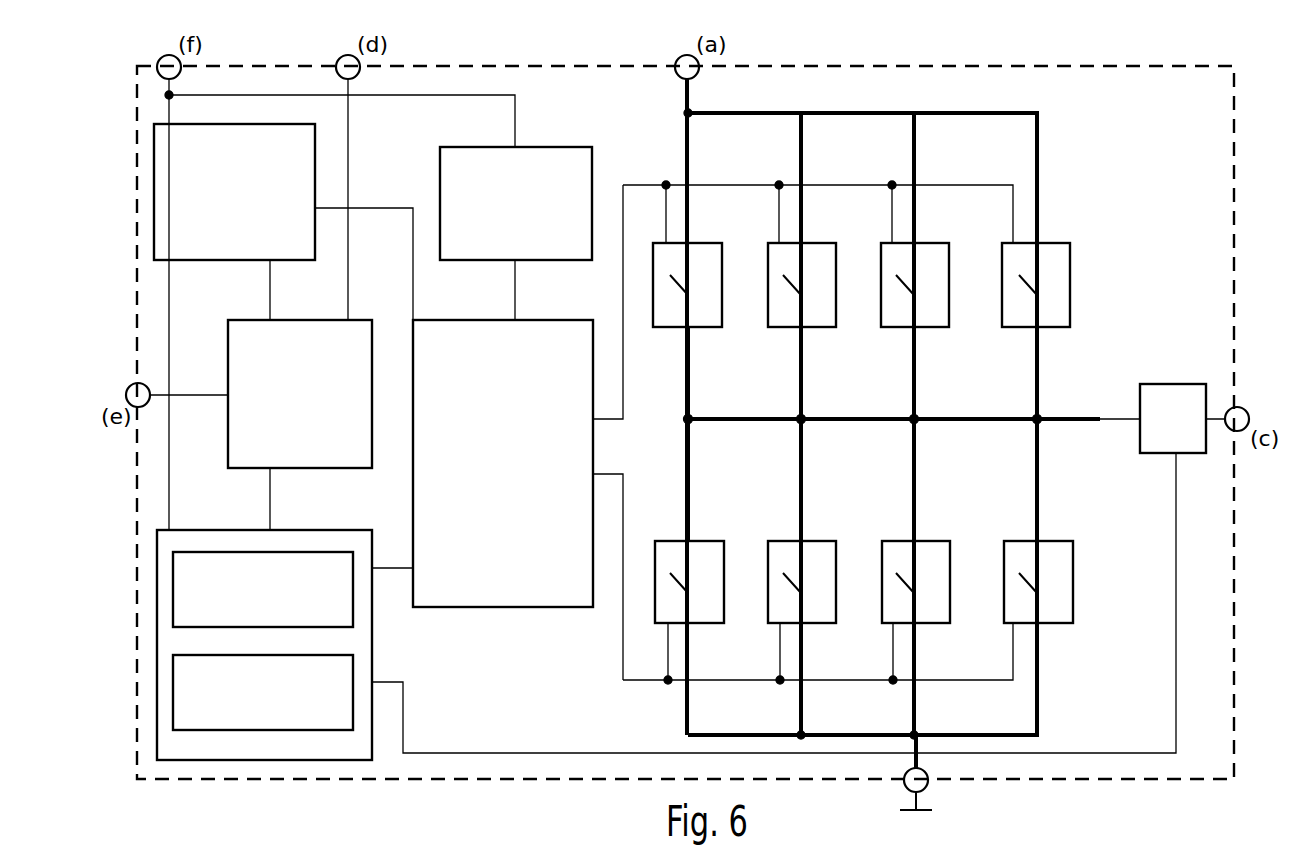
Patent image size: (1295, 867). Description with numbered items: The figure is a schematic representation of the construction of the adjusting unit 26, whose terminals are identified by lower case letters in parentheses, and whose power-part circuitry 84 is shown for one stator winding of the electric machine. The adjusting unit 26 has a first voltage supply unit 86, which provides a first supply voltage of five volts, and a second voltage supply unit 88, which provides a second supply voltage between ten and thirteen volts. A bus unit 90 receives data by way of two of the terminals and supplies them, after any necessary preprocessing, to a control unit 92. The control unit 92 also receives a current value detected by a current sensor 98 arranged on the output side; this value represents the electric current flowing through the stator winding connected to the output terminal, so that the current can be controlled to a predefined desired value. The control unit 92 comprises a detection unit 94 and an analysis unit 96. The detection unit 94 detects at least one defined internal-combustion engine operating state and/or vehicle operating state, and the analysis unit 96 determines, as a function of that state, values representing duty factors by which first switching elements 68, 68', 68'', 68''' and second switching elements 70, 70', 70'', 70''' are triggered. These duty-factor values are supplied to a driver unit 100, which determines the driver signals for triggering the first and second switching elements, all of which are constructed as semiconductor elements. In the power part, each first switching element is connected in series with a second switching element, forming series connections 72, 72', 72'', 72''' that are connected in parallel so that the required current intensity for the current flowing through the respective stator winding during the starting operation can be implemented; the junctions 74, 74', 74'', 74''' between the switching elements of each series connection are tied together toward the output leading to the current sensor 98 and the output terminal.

The adjusting unit 26 is at (1236, 107).
The first switching element 68 is at (689, 312).
The first switching element 68' is at (807, 312).
The first switching element 68'' is at (923, 312).
The first switching element 68''' is at (1048, 312).
The second switching element 70 is at (690, 607).
The second switching element 70' is at (807, 607).
The second switching element 70'' is at (923, 607).
The second switching element 70''' is at (1049, 607).
The series connection 72 is at (662, 434).
The series connection 72' is at (774, 434).
The series connection 72'' is at (886, 434).
The series connection 72''' is at (1004, 434).
The center tap 74 is at (705, 447).
The center tap 74' is at (821, 447).
The center tap 74'' is at (937, 447).
The center tap 74''' is at (1063, 447).
The circuitry 84 is at (1062, 148).
The first voltage supply unit 86 is at (200, 262).
The second voltage supply unit 88 is at (560, 145).
The bus unit 90 is at (335, 470).
The control unit 92 is at (205, 528).
The detection unit 94 is at (353, 612).
The analysis unit 96 is at (353, 672).
The current sensor 98 is at (1173, 384).
The driver unit 100 is at (495, 609).